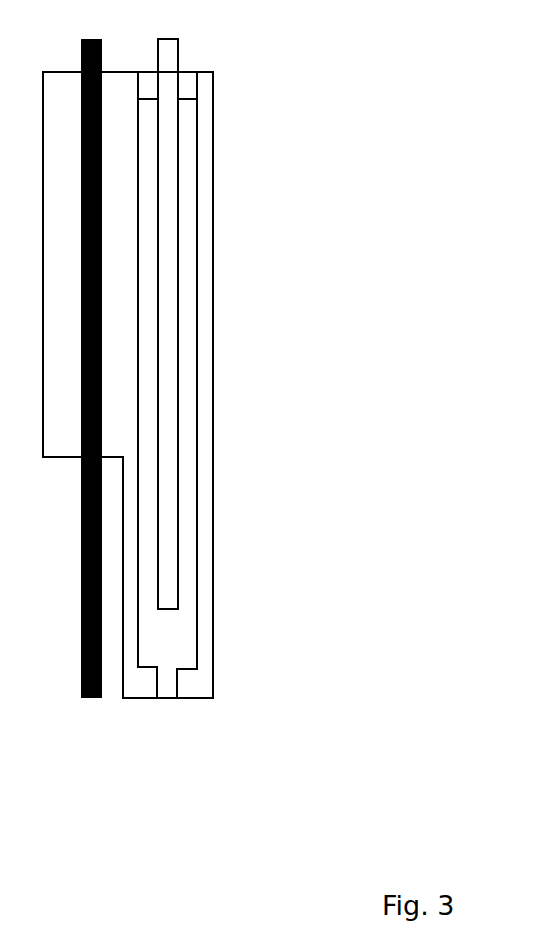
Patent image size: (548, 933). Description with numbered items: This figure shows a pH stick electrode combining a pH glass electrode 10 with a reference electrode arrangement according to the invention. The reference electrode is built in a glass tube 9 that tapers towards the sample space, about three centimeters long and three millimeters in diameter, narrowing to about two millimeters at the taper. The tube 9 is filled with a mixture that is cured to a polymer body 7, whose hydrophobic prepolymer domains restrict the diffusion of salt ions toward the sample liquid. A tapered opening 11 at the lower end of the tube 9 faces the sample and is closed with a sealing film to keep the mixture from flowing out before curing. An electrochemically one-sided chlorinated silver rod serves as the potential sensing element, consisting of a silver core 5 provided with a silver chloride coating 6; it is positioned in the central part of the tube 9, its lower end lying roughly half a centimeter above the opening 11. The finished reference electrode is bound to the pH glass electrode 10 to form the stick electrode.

The silver core 5 is at (226, 324).
The silver chloride coating 6 is at (168, 223).
The polymer body 7 is at (168, 642).
The glass tube 9 is at (200, 683).
The pH glass electrode 10 is at (92, 698).
The tapered opening 11 is at (166, 698).